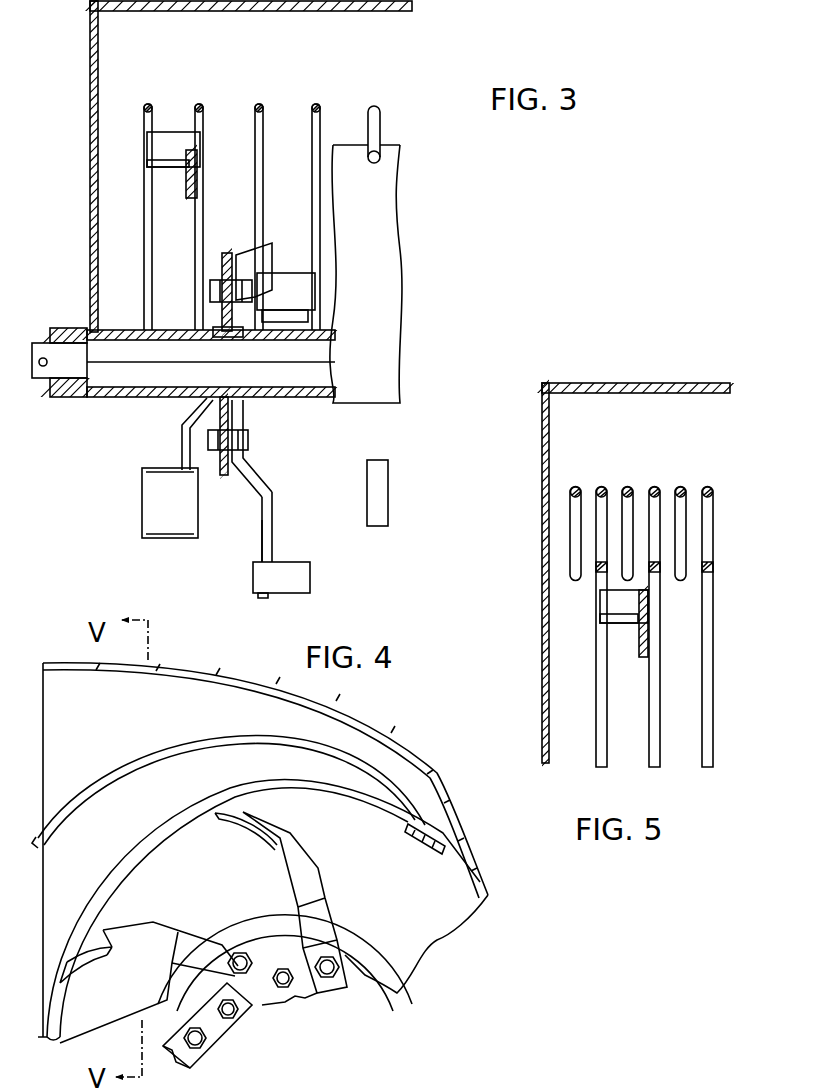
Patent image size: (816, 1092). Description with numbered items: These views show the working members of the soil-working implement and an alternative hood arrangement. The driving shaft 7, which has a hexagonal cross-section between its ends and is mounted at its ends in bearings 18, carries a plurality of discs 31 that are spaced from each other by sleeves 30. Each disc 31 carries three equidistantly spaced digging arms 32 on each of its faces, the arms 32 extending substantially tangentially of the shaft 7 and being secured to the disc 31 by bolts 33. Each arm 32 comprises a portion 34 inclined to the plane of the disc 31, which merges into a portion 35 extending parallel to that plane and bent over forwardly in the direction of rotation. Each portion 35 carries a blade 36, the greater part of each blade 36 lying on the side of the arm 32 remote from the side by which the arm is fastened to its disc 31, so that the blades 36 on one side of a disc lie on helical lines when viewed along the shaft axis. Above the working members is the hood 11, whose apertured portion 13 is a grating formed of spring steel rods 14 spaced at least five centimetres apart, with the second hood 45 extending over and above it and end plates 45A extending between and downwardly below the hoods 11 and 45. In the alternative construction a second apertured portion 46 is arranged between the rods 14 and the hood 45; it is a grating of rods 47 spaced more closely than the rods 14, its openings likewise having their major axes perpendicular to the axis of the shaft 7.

In FIG. 3, the driving shaft 7 is at (104, 397).
In FIG. 3, the hood 11 is at (403, 250).
In FIG. 4, the hood 11 is at (488, 887).
In FIG. 3, the apertured portion 13 is at (382, 120).
In FIG. 5, the apertured portion 13 is at (595, 710).
In FIG. 4, the apertured portion 13 is at (190, 812).
In FIG. 3, the rods 14 is at (316, 106).
In FIG. 5, the rods 14 is at (702, 750).
In FIG. 4, the rods 14 is at (90, 888).
In FIG. 3, the bearings 18 is at (70, 328).
In FIG. 3, the sleeves 30 is at (176, 338).
In FIG. 3, the discs 31 is at (226, 476).
In FIG. 4, the discs 31 is at (290, 1004).
In FIG. 3, the digging arms 32 is at (284, 520).
In FIG. 4, the digging arms 32 is at (334, 921).
In FIG. 3, the bolts 33 is at (250, 442).
In FIG. 3, the inclined portion 34 is at (270, 484).
In FIG. 3, the parallel portion 35 is at (262, 542).
In FIG. 5, the parallel portion 35 is at (640, 658).
In FIG. 3, the blade 36 is at (176, 132).
In FIG. 5, the blade 36 is at (614, 623).
In FIG. 4, the blade 36 is at (78, 970).
In FIG. 3, the second hood 45 is at (316, 11).
In FIG. 5, the second hood 45 is at (668, 383).
In FIG. 4, the second hood 45 is at (388, 728).
In FIG. 3, the end plates 45A is at (98, 66).
In FIG. 5, the end plates 45A is at (549, 446).
In FIG. 4, the end plates 45A is at (426, 955).
In FIG. 5, the second apertured portion 46 is at (708, 488).
In FIG. 4, the second apertured portion 46 is at (228, 740).
In FIG. 5, the rods 47 is at (653, 488).
In FIG. 4, the rods 47 is at (114, 778).